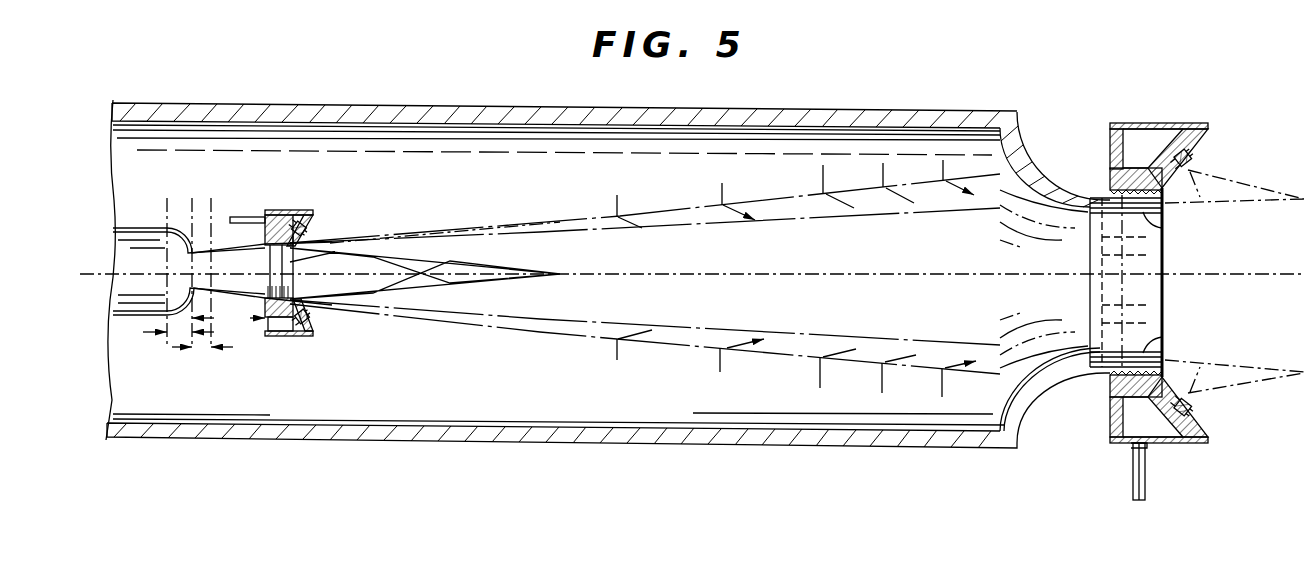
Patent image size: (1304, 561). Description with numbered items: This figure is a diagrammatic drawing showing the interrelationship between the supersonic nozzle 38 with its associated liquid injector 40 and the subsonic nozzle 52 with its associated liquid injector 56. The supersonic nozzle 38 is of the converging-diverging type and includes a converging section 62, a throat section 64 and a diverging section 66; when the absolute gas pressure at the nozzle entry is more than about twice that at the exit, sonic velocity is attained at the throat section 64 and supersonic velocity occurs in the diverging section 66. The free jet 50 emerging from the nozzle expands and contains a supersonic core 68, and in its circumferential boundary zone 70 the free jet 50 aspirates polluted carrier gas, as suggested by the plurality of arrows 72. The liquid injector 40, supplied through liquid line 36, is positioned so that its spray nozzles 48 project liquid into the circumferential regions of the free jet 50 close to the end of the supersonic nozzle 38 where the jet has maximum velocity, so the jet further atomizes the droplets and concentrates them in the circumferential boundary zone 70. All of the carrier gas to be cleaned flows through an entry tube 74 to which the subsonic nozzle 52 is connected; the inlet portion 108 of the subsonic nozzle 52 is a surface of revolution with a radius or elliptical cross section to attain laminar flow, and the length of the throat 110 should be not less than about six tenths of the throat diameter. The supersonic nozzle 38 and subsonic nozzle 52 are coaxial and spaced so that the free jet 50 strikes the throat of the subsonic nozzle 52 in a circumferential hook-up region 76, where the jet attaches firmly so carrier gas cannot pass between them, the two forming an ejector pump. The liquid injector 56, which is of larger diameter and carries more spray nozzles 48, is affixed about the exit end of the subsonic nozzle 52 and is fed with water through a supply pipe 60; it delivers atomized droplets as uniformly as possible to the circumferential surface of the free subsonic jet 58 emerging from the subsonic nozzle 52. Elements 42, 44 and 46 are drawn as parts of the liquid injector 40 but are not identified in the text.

The liquid line 36 is at (245, 217).
The supersonic nozzle 38 is at (140, 226).
The liquid injector 40 is at (302, 331).
The spacer 42 is at (257, 334).
The flange plate 44 is at (284, 334).
The upper flange block 46 is at (296, 212).
The spray nozzles 48 is at (306, 224).
The free jet 50 is at (350, 240).
The subsonic nozzle 52 is at (893, 108).
The liquid injector 56 is at (1181, 443).
The free subsonic jet 58 is at (1277, 377).
The supply pipe 60 is at (1143, 488).
The converging section 62 is at (178, 328).
The throat section 64 is at (200, 348).
The diverging section 66 is at (228, 322).
The supersonic core 68 is at (452, 265).
The circumferential boundary zone 70 is at (789, 225).
The arrows 72 is at (722, 184).
The entry tube 74 is at (488, 118).
The hook-up region 76 is at (1115, 273).
The inlet portion 108 is at (1037, 153).
The throat 110 is at (1148, 225).